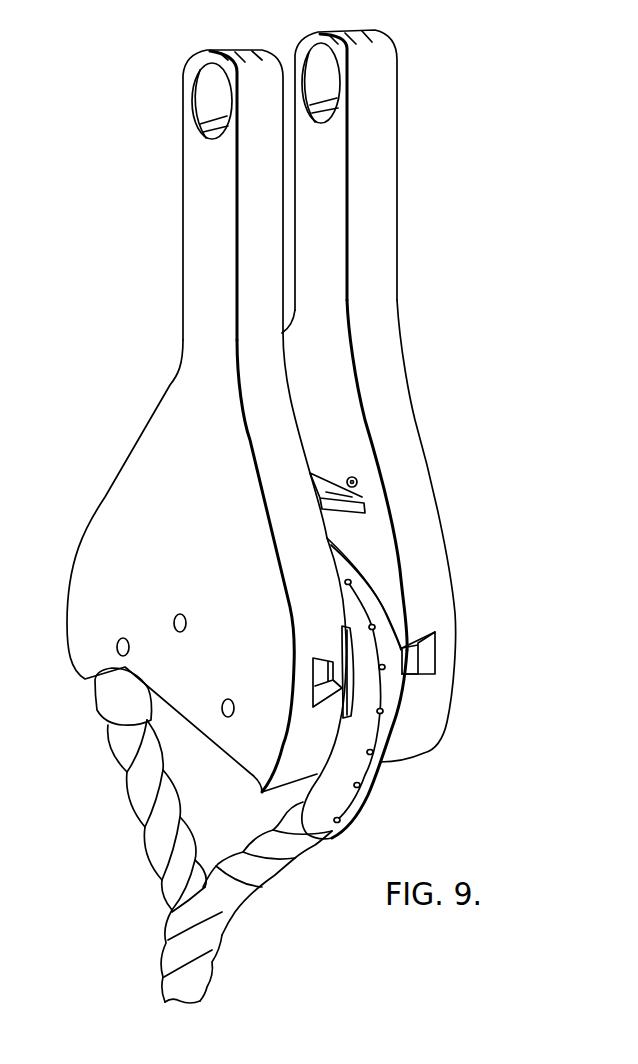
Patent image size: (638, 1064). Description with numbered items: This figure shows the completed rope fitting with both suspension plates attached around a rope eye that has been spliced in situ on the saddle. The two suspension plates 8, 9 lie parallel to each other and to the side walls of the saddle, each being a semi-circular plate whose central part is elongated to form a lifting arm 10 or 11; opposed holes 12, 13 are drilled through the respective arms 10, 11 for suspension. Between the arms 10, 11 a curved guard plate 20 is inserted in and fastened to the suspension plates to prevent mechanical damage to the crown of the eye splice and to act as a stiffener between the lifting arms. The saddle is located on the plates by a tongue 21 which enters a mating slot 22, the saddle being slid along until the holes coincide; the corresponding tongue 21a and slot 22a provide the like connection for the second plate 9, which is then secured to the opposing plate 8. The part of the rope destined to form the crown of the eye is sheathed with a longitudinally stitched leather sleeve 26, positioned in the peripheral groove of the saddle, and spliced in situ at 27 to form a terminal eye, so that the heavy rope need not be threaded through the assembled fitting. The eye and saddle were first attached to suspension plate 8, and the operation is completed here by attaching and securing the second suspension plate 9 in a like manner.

The suspension plate 8 is at (402, 470).
The suspension plate 9 is at (277, 468).
The arm 10 is at (208, 82).
The arm 11 is at (315, 73).
The hole 12 is at (212, 101).
The hole 13 is at (321, 83).
The curved guard plate 20 is at (327, 492).
The tongue 21 is at (413, 658).
The wedge pin 21a is at (320, 670).
The slot 22 is at (437, 642).
The guide rail 22a is at (338, 688).
The leather sleeve 26 is at (363, 590).
The splice 27 is at (210, 898).